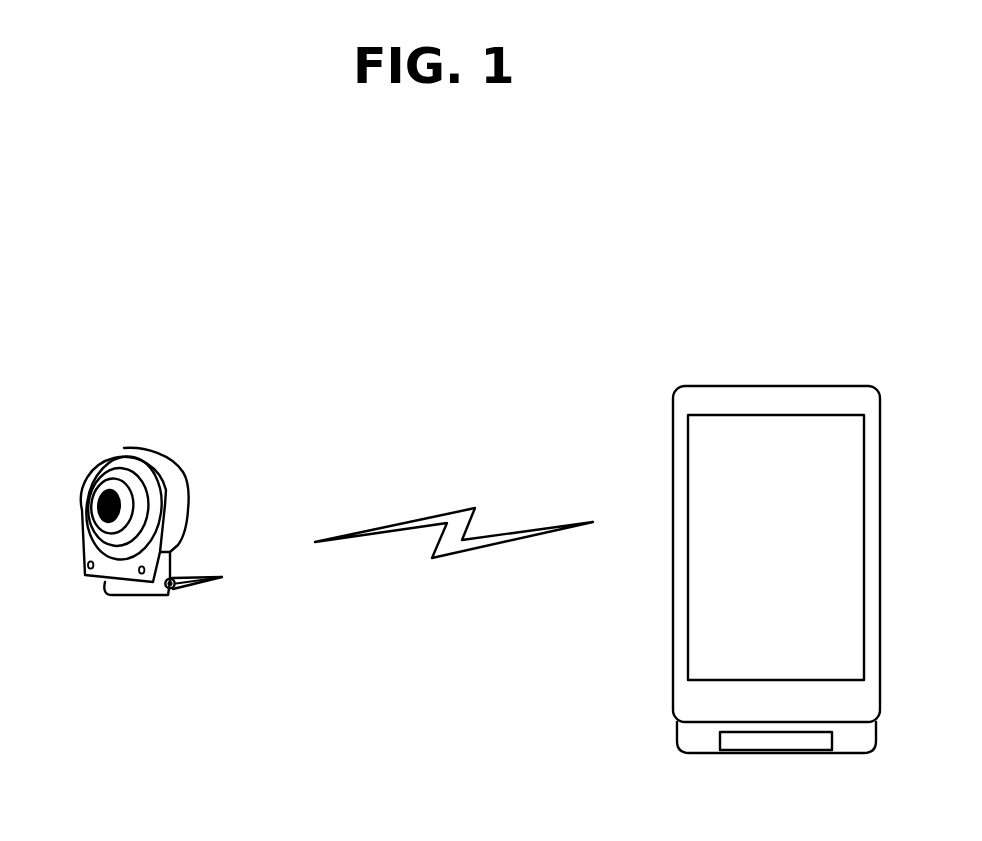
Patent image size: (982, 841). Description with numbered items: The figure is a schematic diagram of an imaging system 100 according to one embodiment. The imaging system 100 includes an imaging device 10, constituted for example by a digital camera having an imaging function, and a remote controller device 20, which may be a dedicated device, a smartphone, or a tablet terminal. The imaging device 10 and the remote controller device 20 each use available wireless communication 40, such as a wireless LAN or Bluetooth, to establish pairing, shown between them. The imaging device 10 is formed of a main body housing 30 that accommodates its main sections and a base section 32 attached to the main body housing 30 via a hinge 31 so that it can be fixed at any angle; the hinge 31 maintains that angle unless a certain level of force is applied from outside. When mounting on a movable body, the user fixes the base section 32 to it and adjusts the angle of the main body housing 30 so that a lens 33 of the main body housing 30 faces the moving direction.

The imaging system 100 is at (531, 251).
The imaging device 10 is at (158, 448).
The remote controller device 20 is at (773, 386).
The main body housing 30 is at (182, 502).
The hinge 31 is at (133, 594).
The base section 32 is at (195, 585).
The lens 33 is at (99, 482).
The wireless communication 40 is at (462, 505).